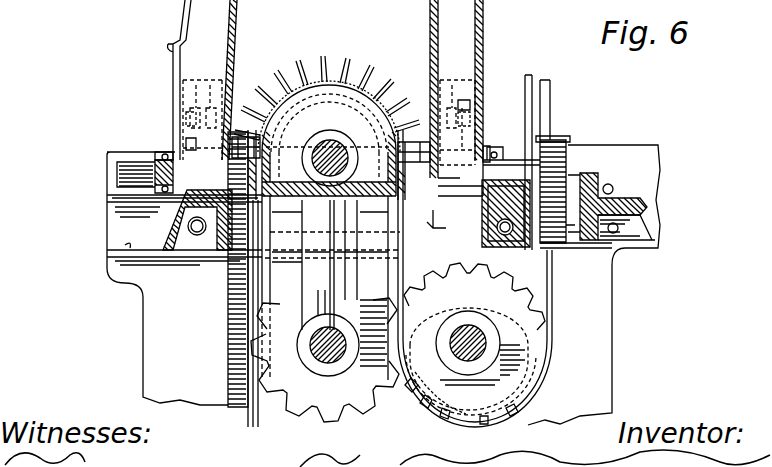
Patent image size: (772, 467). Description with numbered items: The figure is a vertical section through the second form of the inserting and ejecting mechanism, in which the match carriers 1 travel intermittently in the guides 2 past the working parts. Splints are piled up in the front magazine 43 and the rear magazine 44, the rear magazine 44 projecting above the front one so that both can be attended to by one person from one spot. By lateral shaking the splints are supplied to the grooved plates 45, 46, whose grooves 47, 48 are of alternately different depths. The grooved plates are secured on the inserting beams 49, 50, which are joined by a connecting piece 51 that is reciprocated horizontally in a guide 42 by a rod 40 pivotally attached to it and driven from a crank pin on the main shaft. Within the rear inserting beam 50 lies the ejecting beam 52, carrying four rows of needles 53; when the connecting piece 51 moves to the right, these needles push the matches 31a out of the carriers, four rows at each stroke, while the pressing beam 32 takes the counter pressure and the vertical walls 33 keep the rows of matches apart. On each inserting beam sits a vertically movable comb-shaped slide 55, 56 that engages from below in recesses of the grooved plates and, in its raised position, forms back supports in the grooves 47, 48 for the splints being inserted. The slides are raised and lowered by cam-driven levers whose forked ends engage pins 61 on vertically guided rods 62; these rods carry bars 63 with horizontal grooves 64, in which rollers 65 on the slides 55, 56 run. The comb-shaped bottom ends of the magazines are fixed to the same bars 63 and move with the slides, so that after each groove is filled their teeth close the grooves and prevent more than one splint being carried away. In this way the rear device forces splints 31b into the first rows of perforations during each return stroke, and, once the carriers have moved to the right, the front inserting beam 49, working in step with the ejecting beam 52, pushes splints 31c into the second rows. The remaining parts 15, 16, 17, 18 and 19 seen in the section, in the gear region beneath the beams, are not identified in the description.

The match carriers 1 is at (258, 342).
The guides 2 is at (253, 420).
The clutch segments 15 is at (460, 420).
The gear 16 is at (333, 400).
The shaft 17 is at (484, 352).
The shaft 18 is at (318, 362).
The housing cover 19 is at (308, 108).
The matches 31a is at (565, 147).
The splints 31b is at (338, 68).
The splints 31c is at (227, 357).
The pressing beam 32 is at (552, 222).
The vertical walls 33 is at (573, 175).
The rod 40 is at (426, 237).
The guide 42 is at (143, 197).
The front magazine 43 is at (202, 80).
The rear magazine 44 is at (456, 98).
The grooved plate 45 is at (117, 180).
The grooved plate 46 is at (505, 147).
The grooves 47 is at (444, 217).
The grooves 48 is at (508, 158).
The inserting beam 49 is at (183, 250).
The inserting beam 50 is at (517, 227).
The connecting piece 51 is at (153, 215).
The ejecting beam 52 is at (557, 240).
The rows of needles 53 is at (538, 220).
The slide 55 is at (222, 250).
The slide 56 is at (481, 230).
The pins 61 is at (190, 125).
The vertically guided rods 62 is at (190, 142).
The bars 63 is at (170, 152).
The horizontal grooves 64 is at (432, 150).
The rollers 65 is at (238, 137).